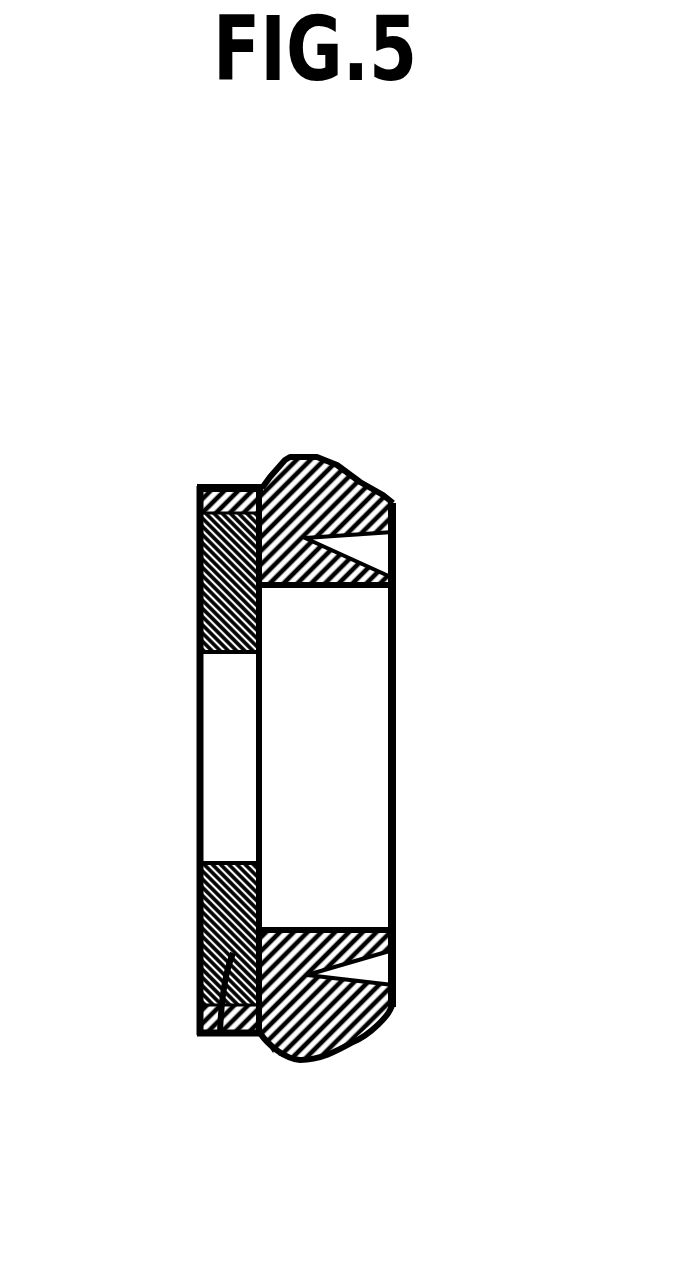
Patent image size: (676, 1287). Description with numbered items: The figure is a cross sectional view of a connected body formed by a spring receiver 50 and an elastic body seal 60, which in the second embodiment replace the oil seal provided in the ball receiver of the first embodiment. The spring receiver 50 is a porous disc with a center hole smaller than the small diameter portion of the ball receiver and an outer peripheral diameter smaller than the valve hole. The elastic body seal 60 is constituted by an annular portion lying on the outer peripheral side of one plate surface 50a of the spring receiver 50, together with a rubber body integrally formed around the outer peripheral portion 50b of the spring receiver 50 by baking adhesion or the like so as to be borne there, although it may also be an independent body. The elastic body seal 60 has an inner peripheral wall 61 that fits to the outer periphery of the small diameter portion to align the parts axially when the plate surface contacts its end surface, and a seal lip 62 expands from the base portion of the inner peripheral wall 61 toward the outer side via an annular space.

The spring receiver 50 is at (200, 555).
The plate surface 50a is at (220, 1030).
The outer peripheral portion 50b is at (200, 488).
The elastic body seal 60 is at (411, 682).
The inner peripheral wall 61 is at (392, 598).
The seal lip 62 is at (362, 488).